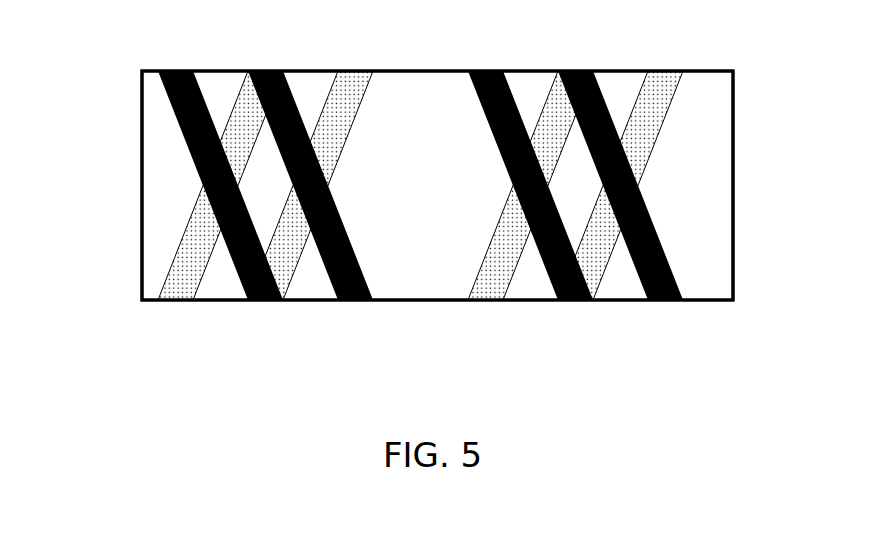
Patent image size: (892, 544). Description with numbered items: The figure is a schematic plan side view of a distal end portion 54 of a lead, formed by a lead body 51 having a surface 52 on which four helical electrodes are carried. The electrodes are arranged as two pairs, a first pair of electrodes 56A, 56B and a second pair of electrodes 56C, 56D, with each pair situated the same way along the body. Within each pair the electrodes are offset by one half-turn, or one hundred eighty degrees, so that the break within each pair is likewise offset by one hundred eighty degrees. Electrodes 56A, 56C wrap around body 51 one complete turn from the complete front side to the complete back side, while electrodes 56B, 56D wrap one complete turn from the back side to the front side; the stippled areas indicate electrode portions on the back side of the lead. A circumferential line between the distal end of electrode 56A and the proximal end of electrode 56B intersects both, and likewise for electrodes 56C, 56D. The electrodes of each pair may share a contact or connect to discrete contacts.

The lead body 51 is at (312, 71).
The surface 52 is at (220, 71).
The distal end portion 54 is at (630, 327).
The electrode 56A is at (267, 300).
The electrode 56B is at (353, 300).
The electrode 56C is at (487, 71).
The electrode 56D is at (577, 71).